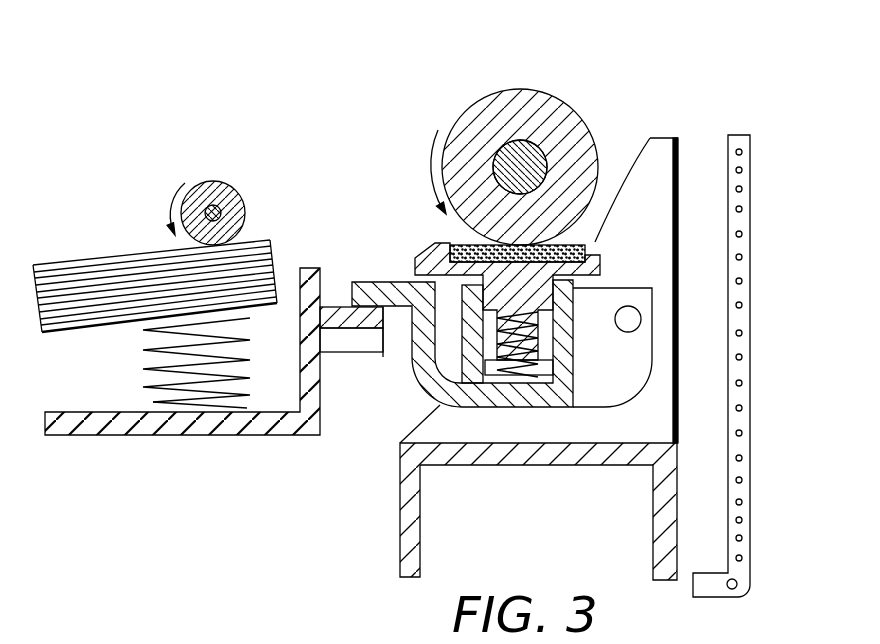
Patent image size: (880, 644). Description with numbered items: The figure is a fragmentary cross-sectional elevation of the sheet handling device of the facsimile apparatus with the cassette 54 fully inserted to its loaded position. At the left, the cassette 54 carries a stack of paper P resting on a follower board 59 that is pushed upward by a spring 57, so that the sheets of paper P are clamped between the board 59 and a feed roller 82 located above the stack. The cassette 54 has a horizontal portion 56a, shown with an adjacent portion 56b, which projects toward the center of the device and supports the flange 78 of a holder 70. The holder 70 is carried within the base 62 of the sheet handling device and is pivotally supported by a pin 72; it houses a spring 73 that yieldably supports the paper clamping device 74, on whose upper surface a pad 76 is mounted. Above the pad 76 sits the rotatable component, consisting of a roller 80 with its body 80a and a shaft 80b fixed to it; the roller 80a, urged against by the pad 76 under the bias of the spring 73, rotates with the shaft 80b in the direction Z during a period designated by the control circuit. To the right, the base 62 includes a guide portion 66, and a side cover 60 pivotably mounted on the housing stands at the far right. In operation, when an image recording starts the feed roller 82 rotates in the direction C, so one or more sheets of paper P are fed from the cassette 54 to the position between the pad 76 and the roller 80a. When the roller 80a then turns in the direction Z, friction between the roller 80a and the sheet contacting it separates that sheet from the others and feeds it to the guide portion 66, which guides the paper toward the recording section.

The cassette 54 is at (222, 442).
The horizontal portion 56a is at (380, 343).
The support arm lower portion 56b is at (383, 357).
The spring 57 is at (163, 397).
The follower board 59 is at (93, 327).
The side cover 60 is at (742, 178).
The base 62 is at (562, 548).
The guide portion 66 is at (638, 166).
The holder 70 is at (650, 385).
The pin 72 is at (640, 316).
The spring 73 is at (547, 380).
The paper clamping device 74 is at (597, 262).
The pad 76 is at (573, 243).
The flange 78 is at (372, 282).
The feed roller 80 is at (482, 85).
The roller 80a is at (512, 97).
The shaft 80b is at (513, 143).
The feed roller 82 is at (230, 183).
The paper P is at (62, 262).
The direction C is at (158, 207).
The direction Z is at (424, 168).